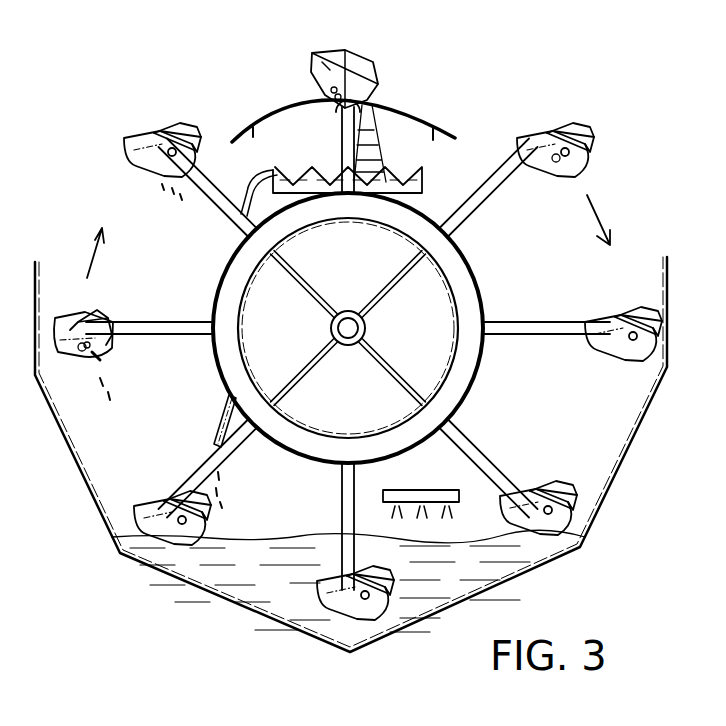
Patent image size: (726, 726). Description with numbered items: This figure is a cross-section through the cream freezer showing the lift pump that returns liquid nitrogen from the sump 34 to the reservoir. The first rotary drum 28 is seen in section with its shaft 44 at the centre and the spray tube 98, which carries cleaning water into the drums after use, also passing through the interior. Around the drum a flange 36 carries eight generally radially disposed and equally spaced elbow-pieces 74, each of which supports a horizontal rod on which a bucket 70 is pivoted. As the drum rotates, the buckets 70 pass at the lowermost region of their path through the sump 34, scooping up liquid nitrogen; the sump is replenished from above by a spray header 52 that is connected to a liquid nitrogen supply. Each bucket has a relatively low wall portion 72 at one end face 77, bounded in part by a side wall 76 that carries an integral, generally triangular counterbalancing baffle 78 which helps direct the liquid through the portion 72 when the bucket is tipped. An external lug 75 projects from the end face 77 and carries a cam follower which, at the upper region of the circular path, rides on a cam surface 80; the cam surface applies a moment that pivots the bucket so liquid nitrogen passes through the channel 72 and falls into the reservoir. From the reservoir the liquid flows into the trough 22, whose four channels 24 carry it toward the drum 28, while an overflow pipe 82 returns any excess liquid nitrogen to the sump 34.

The trough 22 is at (420, 172).
The channels 24 is at (306, 165).
The first rotary drum 28 is at (365, 328).
The sump 34 is at (258, 612).
The flanges 36 is at (455, 262).
The shaft 44 is at (331, 327).
The spray header 52 is at (415, 491).
The buckets 70 is at (145, 172).
The low wall portion 72 is at (204, 506).
The elbow-piece 74 is at (185, 322).
The external lug 75 is at (555, 162).
The side wall 76 is at (96, 354).
The end face 77 is at (98, 362).
The counterbalancing baffle 78 is at (112, 318).
The cam surface 80 is at (290, 126).
The overflow pipe 82 is at (226, 420).
The spray tube 98 is at (357, 328).